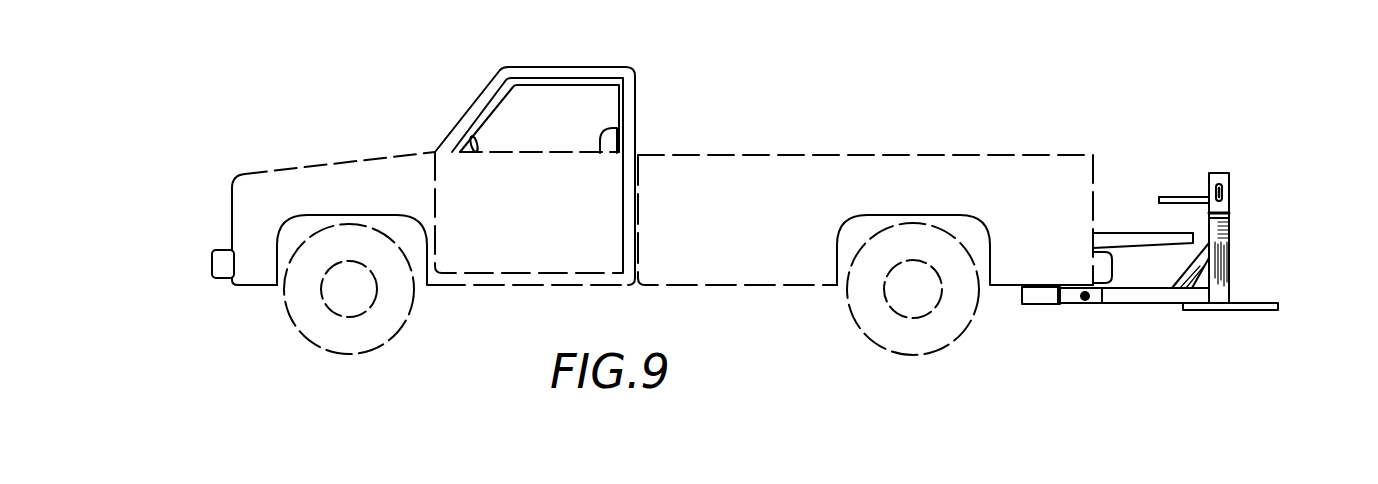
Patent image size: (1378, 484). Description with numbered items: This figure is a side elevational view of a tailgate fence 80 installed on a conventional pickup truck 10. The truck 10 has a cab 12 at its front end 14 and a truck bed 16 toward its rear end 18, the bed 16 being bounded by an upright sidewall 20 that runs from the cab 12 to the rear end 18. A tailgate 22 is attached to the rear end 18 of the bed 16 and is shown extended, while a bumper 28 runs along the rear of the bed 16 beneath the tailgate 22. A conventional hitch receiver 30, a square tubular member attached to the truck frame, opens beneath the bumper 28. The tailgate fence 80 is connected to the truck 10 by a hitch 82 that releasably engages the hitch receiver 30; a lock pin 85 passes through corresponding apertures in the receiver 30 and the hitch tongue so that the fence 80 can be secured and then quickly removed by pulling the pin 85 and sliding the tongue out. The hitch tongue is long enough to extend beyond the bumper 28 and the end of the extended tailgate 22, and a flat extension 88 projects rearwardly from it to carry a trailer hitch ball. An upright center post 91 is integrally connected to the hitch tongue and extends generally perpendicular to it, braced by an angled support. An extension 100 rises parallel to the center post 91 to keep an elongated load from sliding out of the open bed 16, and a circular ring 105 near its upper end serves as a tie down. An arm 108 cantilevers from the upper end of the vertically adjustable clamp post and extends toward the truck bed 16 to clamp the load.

The truck 10 is at (296, 134).
The cab 12 is at (538, 44).
The front end 14 is at (612, 298).
The truck bed 16 is at (866, 140).
The rear end 18 is at (1107, 128).
The sidewall 20 is at (772, 210).
The tailgate 22 is at (1118, 233).
The bumper 28 is at (1112, 275).
The hitch receiver 30 is at (1022, 298).
The tailgate fence 80 is at (1205, 257).
The hitch 82 is at (1119, 313).
The lock pin 85 is at (1085, 300).
The extension 88 is at (1250, 310).
The center post 91 is at (1222, 284).
The extension 100 is at (1218, 173).
The circular ring 105 is at (1228, 193).
The arm 108 is at (1178, 197).